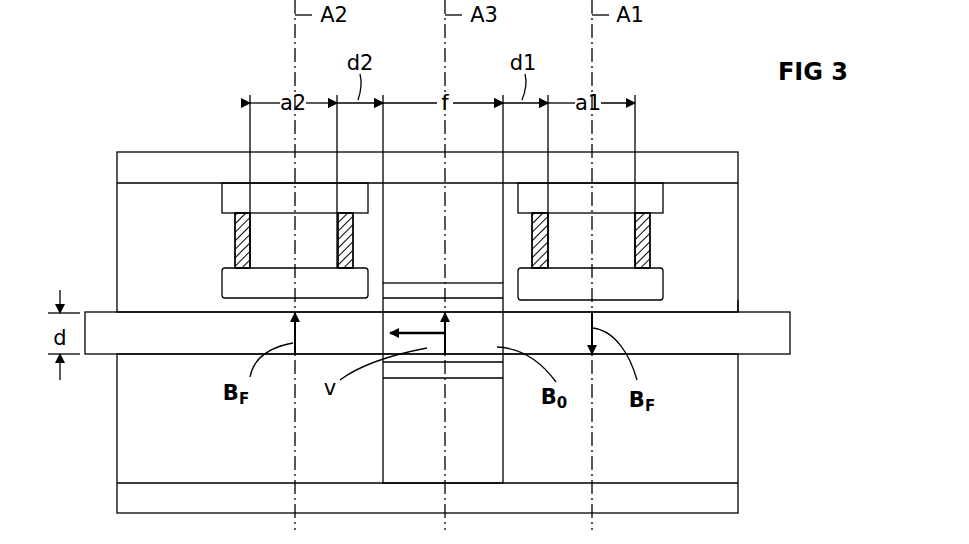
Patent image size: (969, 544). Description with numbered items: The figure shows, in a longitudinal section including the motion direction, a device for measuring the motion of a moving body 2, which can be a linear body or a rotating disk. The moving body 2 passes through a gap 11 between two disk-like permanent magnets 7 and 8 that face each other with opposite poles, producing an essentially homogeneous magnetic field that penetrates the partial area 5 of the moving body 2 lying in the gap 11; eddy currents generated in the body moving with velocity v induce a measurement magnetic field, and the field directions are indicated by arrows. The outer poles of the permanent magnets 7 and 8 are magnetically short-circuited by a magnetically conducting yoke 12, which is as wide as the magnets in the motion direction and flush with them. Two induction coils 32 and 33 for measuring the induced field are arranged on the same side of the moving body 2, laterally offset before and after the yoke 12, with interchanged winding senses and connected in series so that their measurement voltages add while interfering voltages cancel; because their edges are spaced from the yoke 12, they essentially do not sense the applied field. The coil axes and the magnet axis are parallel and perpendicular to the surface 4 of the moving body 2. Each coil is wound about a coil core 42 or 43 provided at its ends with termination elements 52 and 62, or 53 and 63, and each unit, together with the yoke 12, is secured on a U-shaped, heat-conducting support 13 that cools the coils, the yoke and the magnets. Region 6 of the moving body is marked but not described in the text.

The moving body 2 is at (773, 333).
The surface 4 is at (757, 312).
The partial area 5 is at (470, 347).
The plate region 6 is at (180, 340).
The permanent magnet 7 is at (383, 292).
The permanent magnet 8 is at (407, 378).
The gap 11 is at (495, 360).
The yoke 12 is at (400, 458).
The support 13 is at (738, 165).
The induction coil 32 is at (650, 232).
The induction coil 33 is at (236, 235).
The coil core 42 is at (610, 245).
The coil core 43 is at (275, 247).
The termination element 52 is at (653, 283).
The termination element 53 is at (237, 283).
The termination element 62 is at (652, 200).
The termination element 63 is at (232, 200).